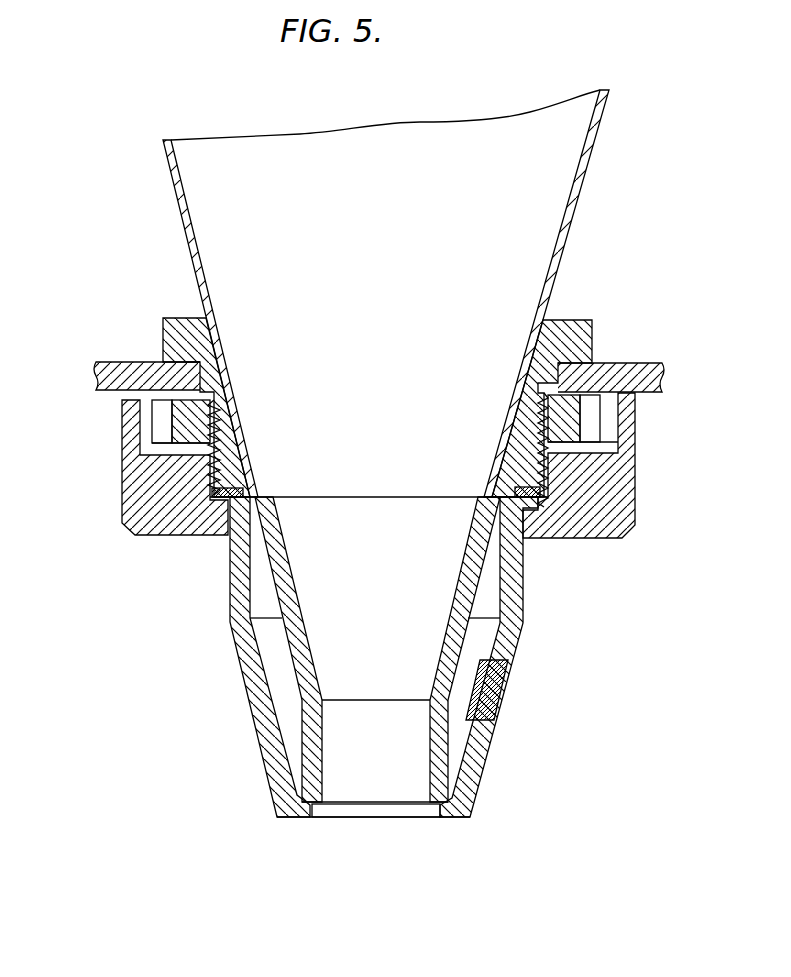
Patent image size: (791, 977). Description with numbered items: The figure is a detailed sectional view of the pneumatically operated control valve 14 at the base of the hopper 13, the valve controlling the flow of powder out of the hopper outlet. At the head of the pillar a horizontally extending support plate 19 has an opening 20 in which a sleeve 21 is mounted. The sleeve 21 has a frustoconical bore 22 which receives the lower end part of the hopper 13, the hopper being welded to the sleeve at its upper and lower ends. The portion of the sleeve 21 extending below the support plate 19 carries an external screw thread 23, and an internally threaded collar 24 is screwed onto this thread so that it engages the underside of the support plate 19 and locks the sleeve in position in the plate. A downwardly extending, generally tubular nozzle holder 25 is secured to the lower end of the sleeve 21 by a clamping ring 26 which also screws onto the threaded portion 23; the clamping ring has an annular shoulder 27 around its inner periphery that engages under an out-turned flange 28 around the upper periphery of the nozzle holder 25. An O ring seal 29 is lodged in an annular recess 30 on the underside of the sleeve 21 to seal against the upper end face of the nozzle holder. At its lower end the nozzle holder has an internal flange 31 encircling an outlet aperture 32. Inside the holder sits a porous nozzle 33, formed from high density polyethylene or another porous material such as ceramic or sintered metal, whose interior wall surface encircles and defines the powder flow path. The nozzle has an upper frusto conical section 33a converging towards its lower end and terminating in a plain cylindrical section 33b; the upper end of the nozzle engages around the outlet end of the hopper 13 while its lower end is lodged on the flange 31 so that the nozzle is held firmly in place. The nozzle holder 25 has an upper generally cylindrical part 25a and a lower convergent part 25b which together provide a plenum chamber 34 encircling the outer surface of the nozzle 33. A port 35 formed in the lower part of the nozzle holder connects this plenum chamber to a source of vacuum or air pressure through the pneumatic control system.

The hopper 13 is at (178, 184).
The pneumatically operated control valve 14 is at (148, 689).
The support plate 19 is at (96, 375).
The opening 20 is at (195, 375).
The sleeve 21 is at (178, 318).
The frustoconical bore 22 is at (548, 352).
The external screw thread 23 is at (615, 447).
The internally threaded collar 24 is at (570, 416).
The nozzle holder 25 is at (238, 662).
The upper generally cylindrical part 25a is at (230, 572).
The lower convergent part 25b is at (252, 716).
The clamping ring 26 is at (620, 490).
The annular shoulder 27 is at (522, 505).
The out-turned flange 28 is at (536, 503).
The O ring seal 29 is at (243, 495).
The annular recess 30 is at (215, 489).
The internal flange 31 is at (446, 818).
The outlet aperture 32 is at (372, 818).
The porous nozzle 33 is at (270, 687).
The upper frusto conical section 33a is at (278, 597).
The plain cylindrical section 33b is at (283, 767).
The plenum chamber 34 is at (265, 635).
The port 35 is at (506, 690).